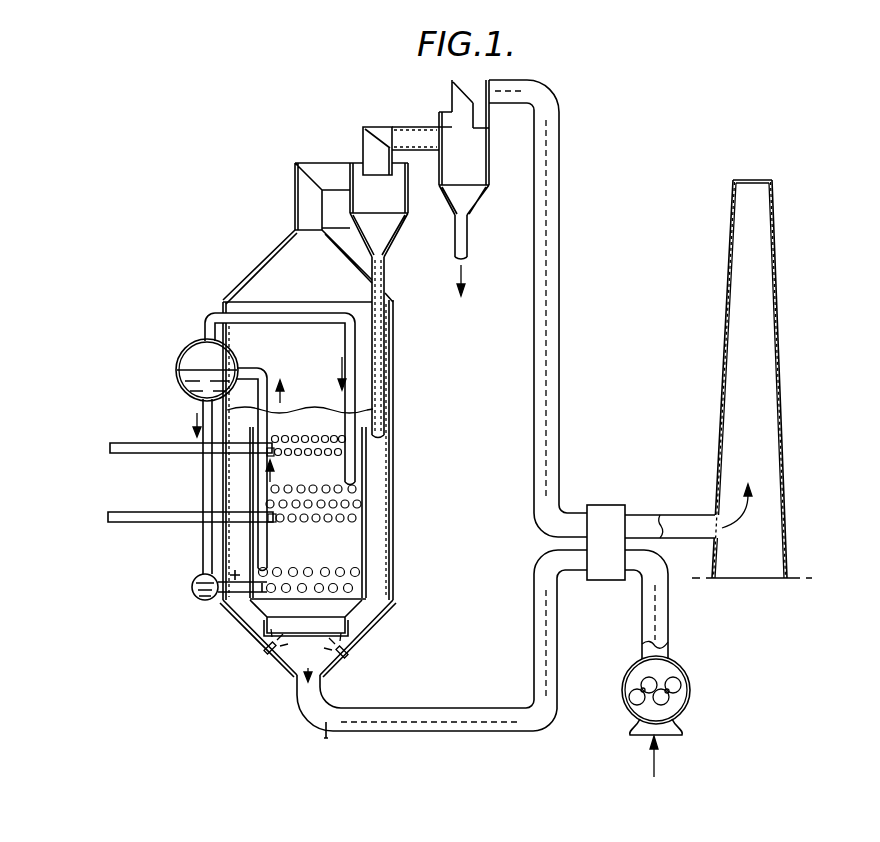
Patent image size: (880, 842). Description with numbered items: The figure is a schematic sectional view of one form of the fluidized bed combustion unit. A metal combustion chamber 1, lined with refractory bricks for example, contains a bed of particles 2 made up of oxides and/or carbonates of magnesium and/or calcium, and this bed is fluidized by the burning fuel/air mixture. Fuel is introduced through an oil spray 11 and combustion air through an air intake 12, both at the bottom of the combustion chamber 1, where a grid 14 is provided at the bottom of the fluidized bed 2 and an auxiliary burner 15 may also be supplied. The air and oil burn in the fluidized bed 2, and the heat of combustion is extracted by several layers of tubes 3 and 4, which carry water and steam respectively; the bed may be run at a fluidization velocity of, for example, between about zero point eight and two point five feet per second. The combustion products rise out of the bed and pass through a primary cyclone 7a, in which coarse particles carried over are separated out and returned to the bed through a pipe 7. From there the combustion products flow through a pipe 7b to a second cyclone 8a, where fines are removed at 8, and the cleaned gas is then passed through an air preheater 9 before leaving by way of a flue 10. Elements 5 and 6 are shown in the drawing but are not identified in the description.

The combustion chamber 1 is at (393, 488).
The bed of particles 2 is at (308, 470).
The tubes 3 is at (163, 441).
The tubes 4 is at (150, 512).
The drum 5 is at (199, 351).
The downcomer pipe 6 is at (198, 405).
The pipe 7 is at (378, 281).
The primary cyclone 7a is at (387, 234).
The pipe 7b is at (408, 134).
The fines removal 8 is at (462, 225).
The second cyclone 8a is at (477, 158).
The air preheater 9 is at (607, 522).
The flue 10 is at (760, 411).
The oil spray 11 is at (268, 652).
The air intake 12 is at (656, 734).
The grid 14 is at (322, 687).
The auxiliary burner 15 is at (324, 738).